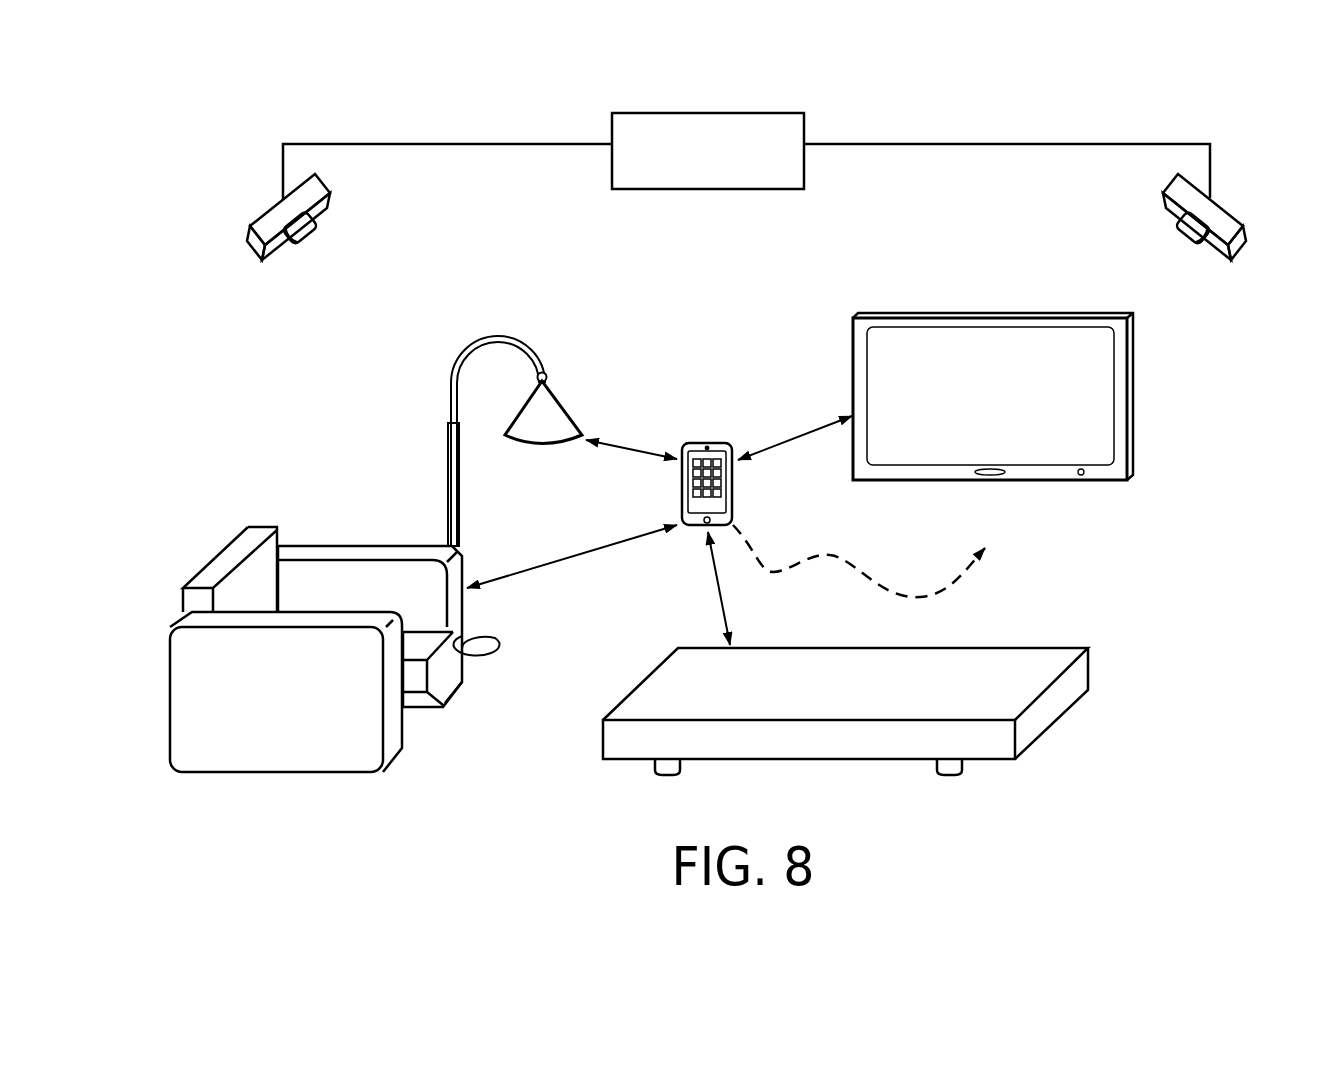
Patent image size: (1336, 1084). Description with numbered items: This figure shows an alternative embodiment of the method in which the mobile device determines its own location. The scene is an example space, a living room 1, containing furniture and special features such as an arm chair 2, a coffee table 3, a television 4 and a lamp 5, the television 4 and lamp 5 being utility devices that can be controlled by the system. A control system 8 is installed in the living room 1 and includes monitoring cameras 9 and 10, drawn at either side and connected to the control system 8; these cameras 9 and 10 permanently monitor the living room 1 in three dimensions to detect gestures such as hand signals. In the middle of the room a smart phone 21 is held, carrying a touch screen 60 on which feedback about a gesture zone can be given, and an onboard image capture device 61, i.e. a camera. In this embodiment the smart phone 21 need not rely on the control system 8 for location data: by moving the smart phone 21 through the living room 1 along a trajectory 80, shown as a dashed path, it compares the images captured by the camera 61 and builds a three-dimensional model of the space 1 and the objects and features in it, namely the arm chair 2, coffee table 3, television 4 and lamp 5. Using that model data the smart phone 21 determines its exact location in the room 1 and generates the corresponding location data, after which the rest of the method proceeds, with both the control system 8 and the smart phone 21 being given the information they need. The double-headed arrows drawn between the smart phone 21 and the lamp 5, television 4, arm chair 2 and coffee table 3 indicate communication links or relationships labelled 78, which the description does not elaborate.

The living room 1 is at (142, 384).
The arm chair 2 is at (345, 545).
The coffee table 3 is at (1090, 668).
The television 4 is at (1134, 395).
The lamp 5 is at (451, 398).
The control system 8 is at (707, 189).
The monitoring camera 9 is at (263, 217).
The monitoring camera 10 is at (1231, 213).
The smart phone 21 is at (735, 505).
The touch screen 60 is at (712, 450).
The image capture device 61 is at (707, 447).
The wireless communication link 78 is at (634, 449).
The trajectory 80 is at (918, 595).